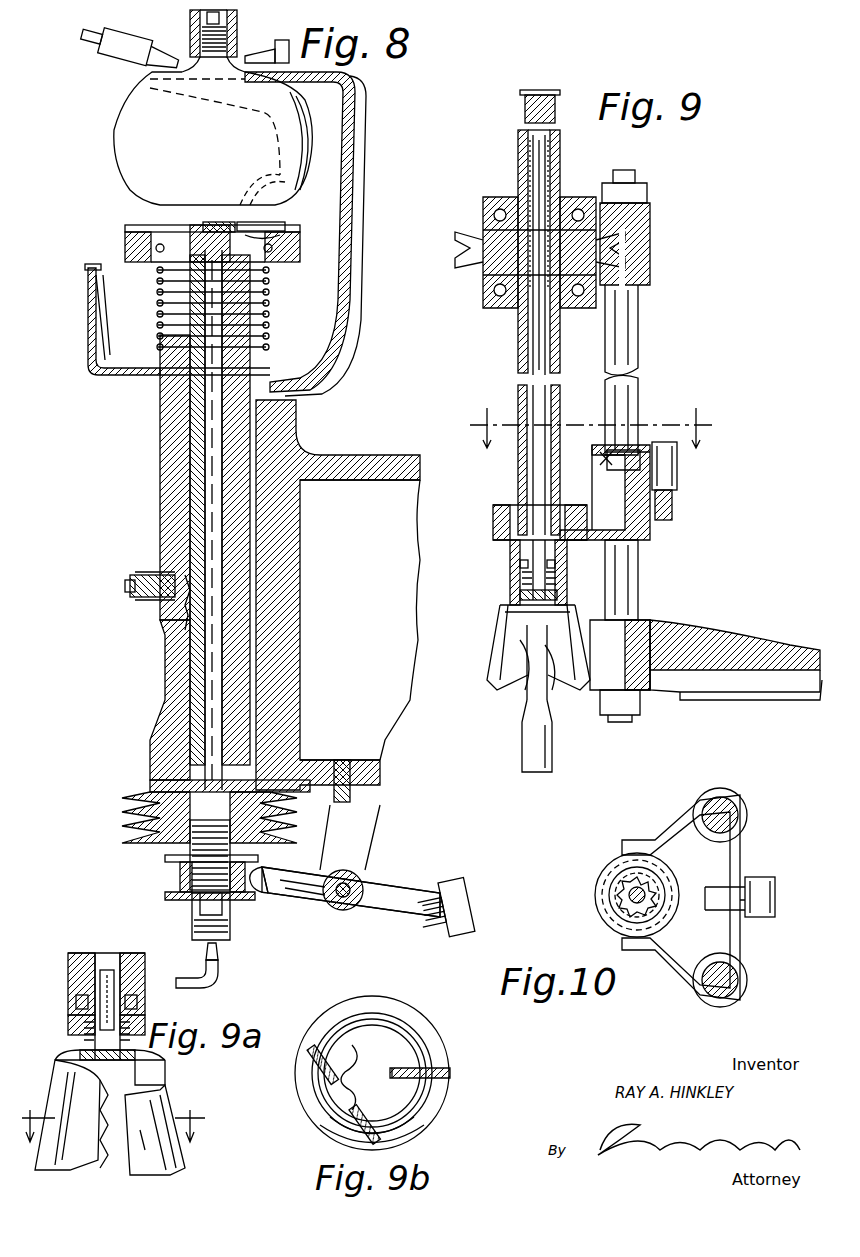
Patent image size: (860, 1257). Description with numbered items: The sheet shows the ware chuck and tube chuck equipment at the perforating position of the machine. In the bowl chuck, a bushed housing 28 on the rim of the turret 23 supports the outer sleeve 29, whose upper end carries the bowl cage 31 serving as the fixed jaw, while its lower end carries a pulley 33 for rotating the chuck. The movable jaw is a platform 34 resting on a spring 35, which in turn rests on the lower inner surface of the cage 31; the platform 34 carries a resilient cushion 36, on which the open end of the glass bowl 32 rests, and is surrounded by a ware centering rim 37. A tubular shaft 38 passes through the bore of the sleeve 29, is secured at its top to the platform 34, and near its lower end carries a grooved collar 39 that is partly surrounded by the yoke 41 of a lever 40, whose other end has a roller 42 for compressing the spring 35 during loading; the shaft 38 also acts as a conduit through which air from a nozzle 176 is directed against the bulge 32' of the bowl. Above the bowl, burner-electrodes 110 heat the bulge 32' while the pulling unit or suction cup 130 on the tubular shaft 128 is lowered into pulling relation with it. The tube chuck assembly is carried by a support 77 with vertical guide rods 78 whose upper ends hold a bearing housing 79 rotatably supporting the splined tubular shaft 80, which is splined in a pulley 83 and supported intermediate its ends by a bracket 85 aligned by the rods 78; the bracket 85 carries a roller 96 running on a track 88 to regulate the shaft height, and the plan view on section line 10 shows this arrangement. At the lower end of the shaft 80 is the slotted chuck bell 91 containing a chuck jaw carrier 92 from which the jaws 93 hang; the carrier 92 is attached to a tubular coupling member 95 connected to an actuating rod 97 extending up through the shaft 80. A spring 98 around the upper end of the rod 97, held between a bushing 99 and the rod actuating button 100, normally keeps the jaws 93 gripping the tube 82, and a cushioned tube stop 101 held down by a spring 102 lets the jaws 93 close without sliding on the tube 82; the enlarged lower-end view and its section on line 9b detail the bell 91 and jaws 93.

In FIG. 8, the turret 23 is at (322, 455).
In FIG. 8, the housing 28 is at (165, 463).
In FIG. 8, the outer sleeve 29 is at (165, 420).
In FIG. 8, the bowl cage 31 is at (346, 266).
In FIG. 8, the bowl 32 is at (190, 138).
In FIG. 8, the bowl bulge 32' is at (224, 50).
In FIG. 8, the pulley 33 is at (130, 830).
In FIG. 8, the platform 34 is at (125, 232).
In FIG. 8, the spring 35 is at (160, 300).
In FIG. 8, the resilient cushion 36 is at (272, 214).
In FIG. 8, the ware centering rim 37 is at (286, 228).
In FIG. 8, the tubular shaft 38 is at (196, 485).
In FIG. 8, the grooved collar 39 is at (168, 858).
In FIG. 8, the lever 40 is at (400, 868).
In FIG. 8, the yoke 41 is at (260, 892).
In FIG. 8, the roller 42 is at (478, 868).
In FIG. 9, the tube chuck assembly support 77 is at (676, 634).
In FIG. 9, the guide rods 78 is at (625, 336).
In FIG. 10, the guide rods 78 is at (720, 812).
In FIG. 9, the bearing housing 79 is at (640, 226).
In FIG. 9, the splined tubular shaft 80 is at (558, 410).
In FIG. 10, the splined tubular shaft 80 is at (620, 895).
In FIG. 9, the tube 82 is at (528, 750).
In FIG. 9, the pulley 83 is at (468, 262).
In FIG. 9, the bracket 85 is at (605, 447).
In FIG. 10, the bracket 85 is at (627, 843).
In FIG. 9, the track 88 is at (673, 512).
In FIG. 9, the chuck bell 91 is at (497, 680).
In FIG. 9A, the chuck bell 91 is at (88, 1158).
In FIG. 9B, the chuck bell 91 is at (400, 1018).
In FIG. 9, the chuck jaw carrier 92 is at (512, 566).
In FIG. 9A, the chuck jaw carrier 92 is at (75, 1000).
In FIG. 9, the jaws 93 is at (557, 690).
In FIG. 9A, the jaws 93 is at (165, 1168).
In FIG. 9B, the jaws 93 is at (365, 1055).
In FIG. 9, the tubular coupling member 95 is at (510, 548).
In FIG. 9A, the tubular coupling member 95 is at (93, 952).
In FIG. 9, the roller 96 is at (676, 472).
In FIG. 10, the roller 96 is at (760, 880).
In FIG. 9, the actuating rod 97 is at (534, 322).
In FIG. 9, the spring 98 is at (557, 165).
In FIG. 9, the bushing 99 is at (530, 285).
In FIG. 9, the rod actuating button 100 is at (525, 105).
In FIG. 9, the cushioned tube stop 101 is at (512, 600).
In FIG. 9A, the cushioned tube stop 101 is at (80, 1054).
In FIG. 9, the spring 102 is at (512, 580).
In FIG. 9A, the spring 102 is at (72, 1020).
In FIG. 8, the burner-electrodes 110 is at (108, 33).
In FIG. 8, the tubular shaft 128 is at (190, 14).
In FIG. 8, the pulling unit 130 is at (200, 40).
In FIG. 8, the nozzle 176 is at (218, 955).
In FIG. 9, the section line 10 is at (592, 423).
In FIG. 9A, the section line 9b is at (112, 1114).